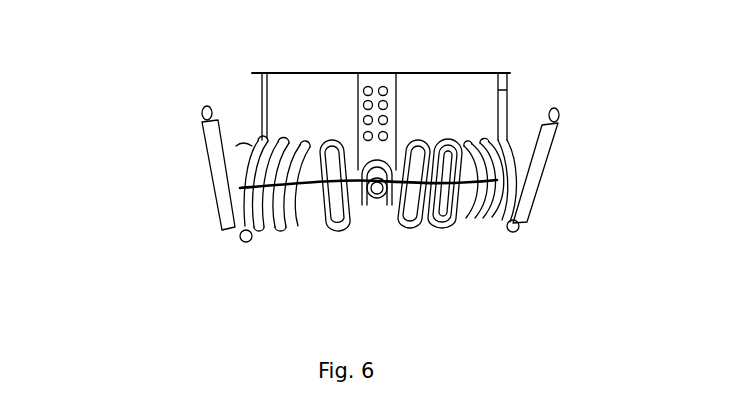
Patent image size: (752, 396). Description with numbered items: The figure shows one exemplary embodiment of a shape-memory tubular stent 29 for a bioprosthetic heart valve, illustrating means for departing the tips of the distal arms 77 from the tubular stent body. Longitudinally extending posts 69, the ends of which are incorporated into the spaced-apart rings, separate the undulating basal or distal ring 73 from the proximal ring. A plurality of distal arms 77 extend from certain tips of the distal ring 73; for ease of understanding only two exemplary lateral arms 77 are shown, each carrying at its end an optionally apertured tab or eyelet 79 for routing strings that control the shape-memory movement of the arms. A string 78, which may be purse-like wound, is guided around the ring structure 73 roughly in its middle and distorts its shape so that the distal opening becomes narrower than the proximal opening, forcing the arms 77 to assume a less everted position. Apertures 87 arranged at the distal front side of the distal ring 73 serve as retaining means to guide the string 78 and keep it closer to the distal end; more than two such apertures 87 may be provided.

The tubular stent 29 is at (573, 248).
The longitudinally extending posts 69 is at (262, 96).
The basal or distal ring 73 is at (182, 184).
The distal arms 77 is at (213, 148).
The string 78 is at (509, 185).
The tabs or eyelets 79 is at (193, 117).
The apertures 87 is at (245, 242).